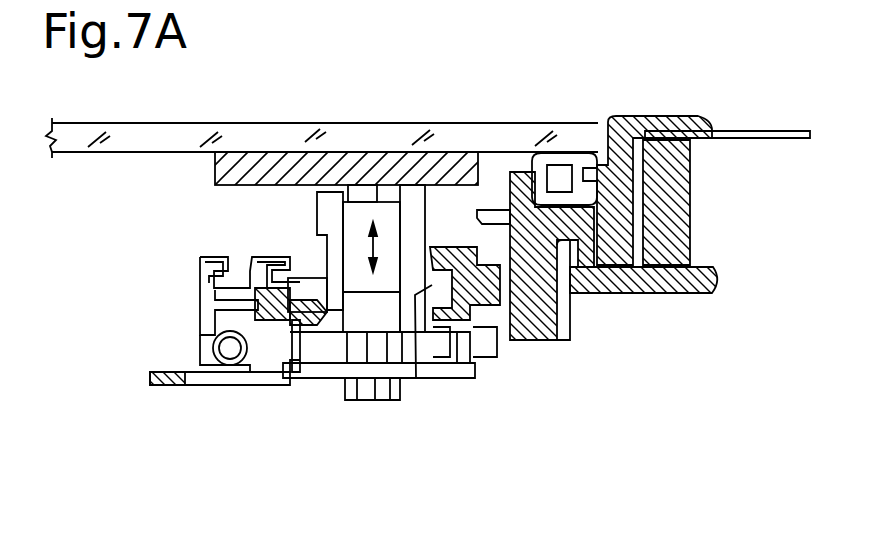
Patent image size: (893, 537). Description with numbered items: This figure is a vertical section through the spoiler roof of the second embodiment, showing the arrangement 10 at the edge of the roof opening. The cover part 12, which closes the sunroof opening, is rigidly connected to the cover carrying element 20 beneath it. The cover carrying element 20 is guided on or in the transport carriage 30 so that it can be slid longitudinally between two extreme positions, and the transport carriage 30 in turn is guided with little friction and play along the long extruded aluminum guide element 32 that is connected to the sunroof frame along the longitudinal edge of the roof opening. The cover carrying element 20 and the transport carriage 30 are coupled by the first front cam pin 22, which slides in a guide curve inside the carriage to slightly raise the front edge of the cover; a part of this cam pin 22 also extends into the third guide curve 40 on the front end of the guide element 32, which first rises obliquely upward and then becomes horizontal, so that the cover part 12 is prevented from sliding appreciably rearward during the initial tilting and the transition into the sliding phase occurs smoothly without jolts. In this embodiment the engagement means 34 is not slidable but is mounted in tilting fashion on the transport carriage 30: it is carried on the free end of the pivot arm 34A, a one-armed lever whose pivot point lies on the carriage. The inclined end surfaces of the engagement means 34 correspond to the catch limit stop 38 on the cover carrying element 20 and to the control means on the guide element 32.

The tonneau cover latch assembly 10 is at (118, 228).
The cover part 12 is at (488, 136).
The cover carrying element 20 is at (386, 217).
The first front cam pin 22 is at (416, 378).
The transport carriage 30 is at (332, 212).
The guide element 32 is at (253, 372).
The engagement means 34 is at (310, 293).
The pivot arm 34A is at (296, 360).
The catch limit stop 38 is at (351, 396).
The third guide curve 40 is at (433, 272).